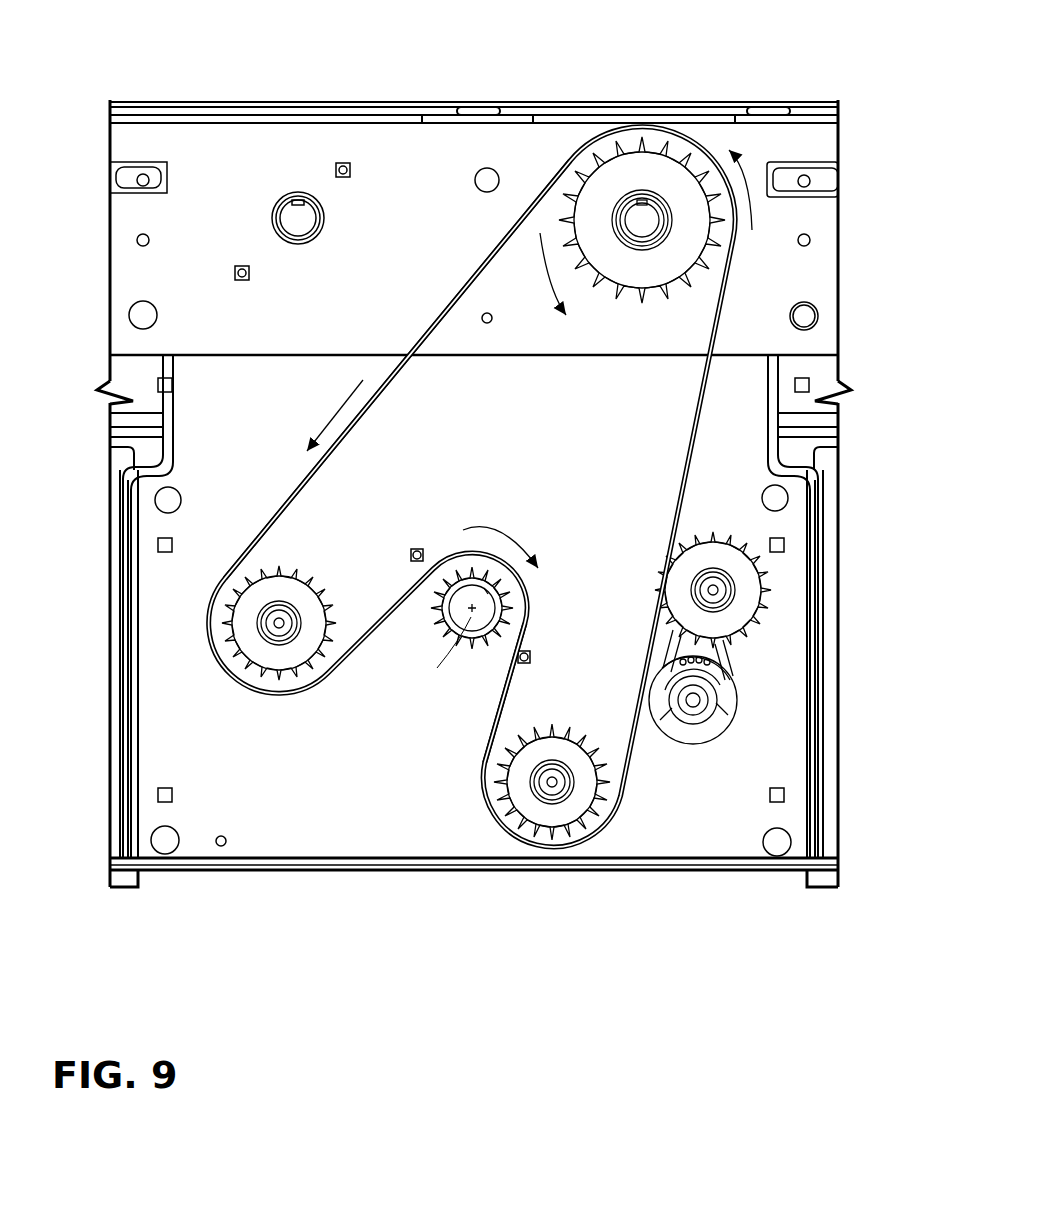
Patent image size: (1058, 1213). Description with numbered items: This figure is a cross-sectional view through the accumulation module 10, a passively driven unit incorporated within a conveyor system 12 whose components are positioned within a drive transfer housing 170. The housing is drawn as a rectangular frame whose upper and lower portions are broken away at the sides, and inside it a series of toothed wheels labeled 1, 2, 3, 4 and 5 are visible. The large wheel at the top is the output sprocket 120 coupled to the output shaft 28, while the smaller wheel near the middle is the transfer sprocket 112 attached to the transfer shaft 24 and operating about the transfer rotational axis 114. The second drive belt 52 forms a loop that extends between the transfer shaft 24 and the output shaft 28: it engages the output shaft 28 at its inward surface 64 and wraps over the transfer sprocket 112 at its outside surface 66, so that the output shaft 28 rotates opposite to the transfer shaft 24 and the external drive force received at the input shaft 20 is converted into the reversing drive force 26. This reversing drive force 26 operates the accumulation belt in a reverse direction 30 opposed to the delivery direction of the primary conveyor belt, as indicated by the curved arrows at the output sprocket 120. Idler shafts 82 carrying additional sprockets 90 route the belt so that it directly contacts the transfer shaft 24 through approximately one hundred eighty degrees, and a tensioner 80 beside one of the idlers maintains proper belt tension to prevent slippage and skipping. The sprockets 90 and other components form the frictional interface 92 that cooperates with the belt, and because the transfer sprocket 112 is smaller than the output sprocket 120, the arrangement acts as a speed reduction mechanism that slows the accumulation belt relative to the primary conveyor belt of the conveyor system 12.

The accumulation module 10 is at (585, 60).
The conveyor system 12 is at (262, 72).
The input shaft 20 is at (500, 533).
The transfer shaft 24 is at (475, 610).
The reversing drive force 26 is at (533, 272).
The output shaft 28 is at (650, 227).
The reverse direction 30 is at (743, 173).
The second drive belt 52 is at (700, 380).
The inward surface 64 is at (360, 420).
The outside surface 66 is at (493, 700).
The tensioner 80 is at (756, 677).
The idler shaft 82 is at (265, 623).
The sprocket 90 is at (230, 594).
The frictional interface 92 is at (546, 165).
The transfer sprocket 112 is at (503, 593).
The transfer rotational axis 114 is at (455, 625).
The output sprocket 120 is at (640, 165).
The drive transfer housing 170 is at (855, 220).
The first sprocket 1 is at (738, 234).
The second sprocket 2 is at (279, 608).
The third sprocket 3 is at (410, 674).
The fourth sprocket 4 is at (552, 772).
The fifth sprocket 5 is at (713, 594).